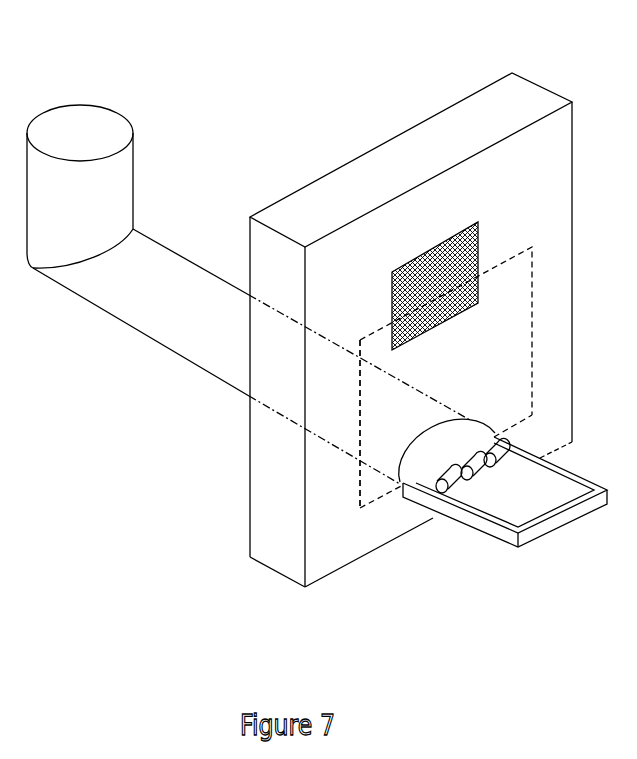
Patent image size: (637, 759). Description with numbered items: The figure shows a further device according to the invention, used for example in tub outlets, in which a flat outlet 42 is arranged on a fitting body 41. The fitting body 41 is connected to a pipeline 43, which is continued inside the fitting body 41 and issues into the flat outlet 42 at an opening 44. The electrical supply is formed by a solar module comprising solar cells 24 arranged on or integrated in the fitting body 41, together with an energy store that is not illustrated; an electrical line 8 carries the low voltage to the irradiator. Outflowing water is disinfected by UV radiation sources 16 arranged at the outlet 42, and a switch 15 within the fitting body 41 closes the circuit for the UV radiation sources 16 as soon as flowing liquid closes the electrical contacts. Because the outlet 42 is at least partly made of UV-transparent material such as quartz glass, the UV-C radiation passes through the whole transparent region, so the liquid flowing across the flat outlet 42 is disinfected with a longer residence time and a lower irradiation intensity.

The electrical line 8 is at (532, 282).
The switch 15 is at (357, 430).
The UV radiation sources 16 is at (488, 467).
The solar cells 24 is at (445, 268).
The fitting body 41 is at (263, 523).
The flat outlet 42 is at (523, 507).
The pipeline 43 is at (183, 302).
The opening 44 is at (445, 440).